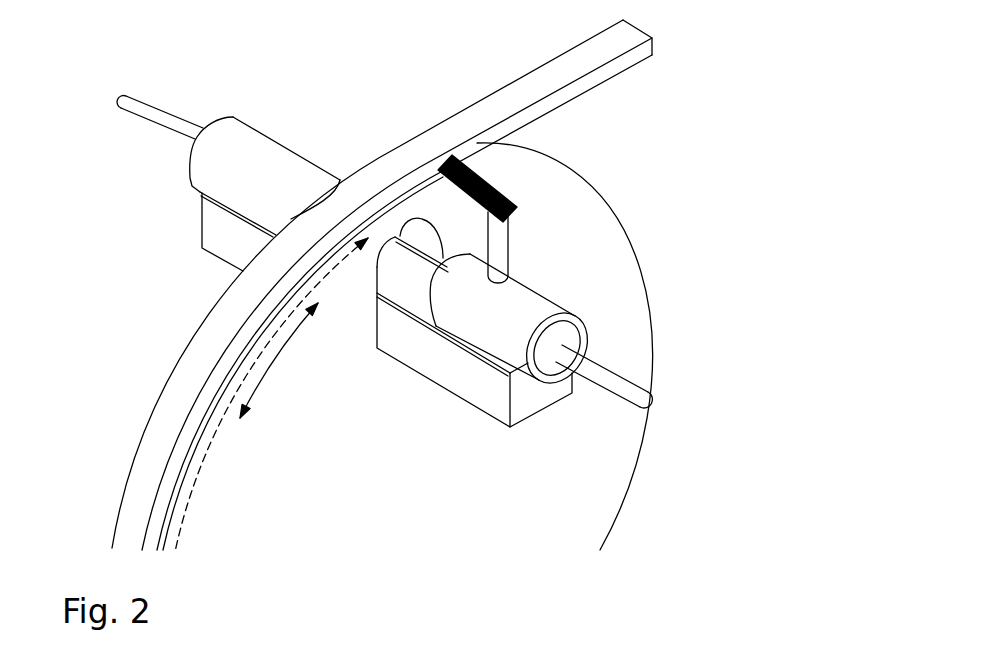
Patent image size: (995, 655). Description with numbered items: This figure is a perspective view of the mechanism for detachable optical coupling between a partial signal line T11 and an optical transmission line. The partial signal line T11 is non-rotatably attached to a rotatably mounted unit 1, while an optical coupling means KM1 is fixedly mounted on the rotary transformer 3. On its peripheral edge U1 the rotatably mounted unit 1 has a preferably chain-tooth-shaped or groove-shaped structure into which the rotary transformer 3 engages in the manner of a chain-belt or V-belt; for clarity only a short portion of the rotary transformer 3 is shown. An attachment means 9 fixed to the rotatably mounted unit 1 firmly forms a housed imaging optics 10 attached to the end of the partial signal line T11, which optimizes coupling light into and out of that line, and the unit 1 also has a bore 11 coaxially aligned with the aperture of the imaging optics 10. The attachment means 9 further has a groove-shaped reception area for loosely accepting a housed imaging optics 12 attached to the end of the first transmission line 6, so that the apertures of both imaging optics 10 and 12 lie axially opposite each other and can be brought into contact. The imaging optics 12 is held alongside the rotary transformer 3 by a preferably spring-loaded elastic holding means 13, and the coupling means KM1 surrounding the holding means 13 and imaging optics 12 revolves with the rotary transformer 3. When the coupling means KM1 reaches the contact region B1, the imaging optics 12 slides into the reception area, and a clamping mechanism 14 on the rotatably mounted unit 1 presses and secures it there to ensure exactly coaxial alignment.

The rotatably mounted unit 1 is at (283, 479).
The rotary transformer 3 is at (445, 137).
The first transmission line 6 is at (622, 382).
The attachment means 9 is at (537, 398).
The housed imaging optics 10 is at (258, 140).
The bore 11 is at (404, 236).
The housed imaging optics 12 is at (537, 303).
The holding means 13 is at (512, 188).
The clamping mechanism 14 is at (503, 237).
The partial signal line T11 is at (188, 133).
The optical coupling means KM1 is at (553, 260).
The peripheral edge U1 is at (279, 360).
The contact region B1 is at (205, 473).